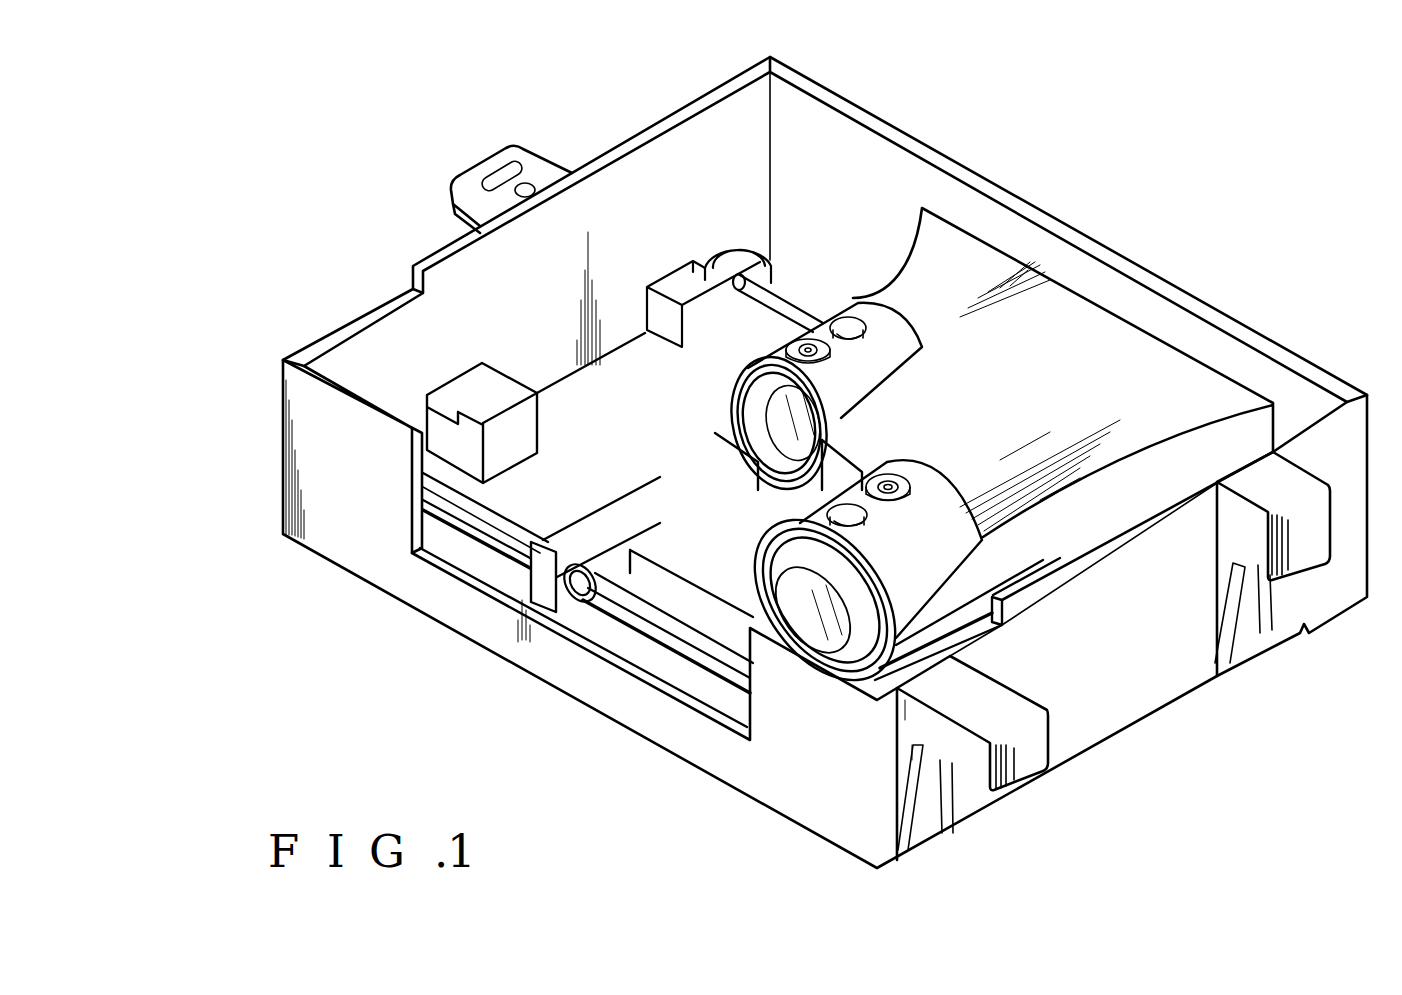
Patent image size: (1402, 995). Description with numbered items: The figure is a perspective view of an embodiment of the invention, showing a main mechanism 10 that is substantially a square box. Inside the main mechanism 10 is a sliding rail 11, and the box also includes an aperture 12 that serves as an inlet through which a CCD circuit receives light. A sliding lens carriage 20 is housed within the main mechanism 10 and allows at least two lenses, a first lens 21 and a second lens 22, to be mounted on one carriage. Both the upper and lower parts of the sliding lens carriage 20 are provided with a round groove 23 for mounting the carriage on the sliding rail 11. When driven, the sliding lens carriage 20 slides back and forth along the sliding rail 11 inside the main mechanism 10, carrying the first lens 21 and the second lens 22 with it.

The main mechanism 10 is at (1130, 267).
The sliding rail 11 is at (800, 302).
The aperture 12 is at (638, 670).
The sliding lens carriage 20 is at (1147, 377).
The first lens 21 is at (788, 423).
The second lens 22 is at (813, 620).
The round groove 23 is at (583, 603).